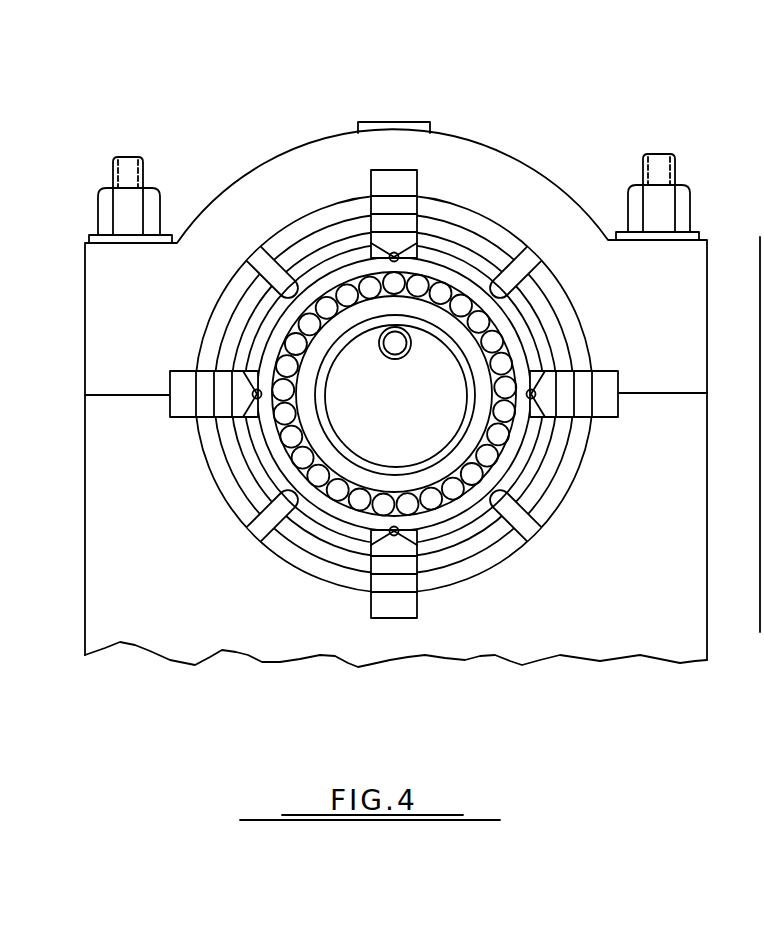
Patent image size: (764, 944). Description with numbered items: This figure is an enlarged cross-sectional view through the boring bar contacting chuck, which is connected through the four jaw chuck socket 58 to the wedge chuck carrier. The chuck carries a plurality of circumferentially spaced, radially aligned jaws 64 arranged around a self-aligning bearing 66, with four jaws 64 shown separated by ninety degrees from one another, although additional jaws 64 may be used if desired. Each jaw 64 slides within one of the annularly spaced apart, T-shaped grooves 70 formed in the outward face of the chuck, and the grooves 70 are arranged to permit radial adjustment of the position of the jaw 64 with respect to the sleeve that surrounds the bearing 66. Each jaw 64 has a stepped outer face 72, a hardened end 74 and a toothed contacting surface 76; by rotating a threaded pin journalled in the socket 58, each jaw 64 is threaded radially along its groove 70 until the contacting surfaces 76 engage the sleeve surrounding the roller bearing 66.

The four jaw chuck socket 58 is at (482, 237).
The jaws 64 is at (612, 390).
The self-aligning bearing 66 is at (508, 334).
The T-shaped grooves 70 is at (540, 415).
The stepped outer face 72 is at (384, 205).
The hardened end 74 is at (403, 172).
The toothed contacting surface 76 is at (386, 261).